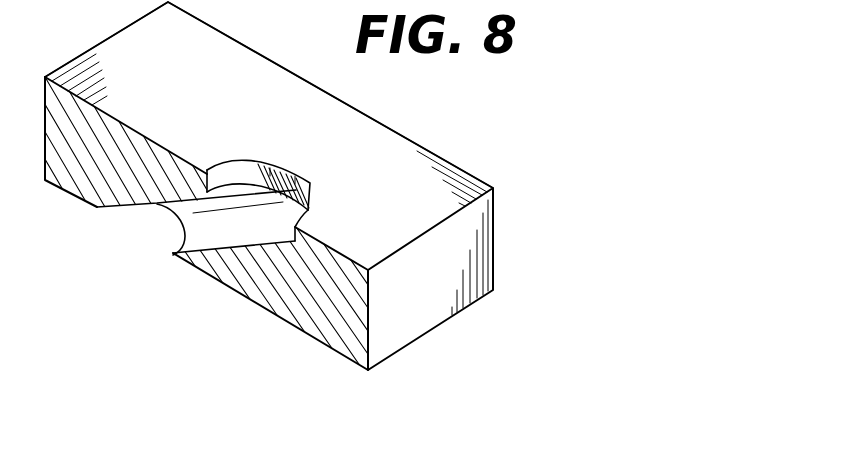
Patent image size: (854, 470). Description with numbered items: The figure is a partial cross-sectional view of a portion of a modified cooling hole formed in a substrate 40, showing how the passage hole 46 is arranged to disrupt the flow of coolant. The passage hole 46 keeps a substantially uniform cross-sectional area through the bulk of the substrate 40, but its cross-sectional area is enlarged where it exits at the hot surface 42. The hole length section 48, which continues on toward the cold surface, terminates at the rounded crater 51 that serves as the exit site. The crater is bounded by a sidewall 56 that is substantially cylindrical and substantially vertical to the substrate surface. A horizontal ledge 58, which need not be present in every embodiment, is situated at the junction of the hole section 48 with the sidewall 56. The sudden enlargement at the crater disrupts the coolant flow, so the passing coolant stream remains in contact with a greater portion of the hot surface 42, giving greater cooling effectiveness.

The substrate 40 is at (468, 258).
The hot surface 42 is at (450, 188).
The passage hole 46 is at (259, 140).
The hole length section 48 is at (207, 227).
The rounded crater 51 is at (307, 183).
The sidewall 56 is at (286, 176).
The horizontal ledge 58 is at (232, 186).